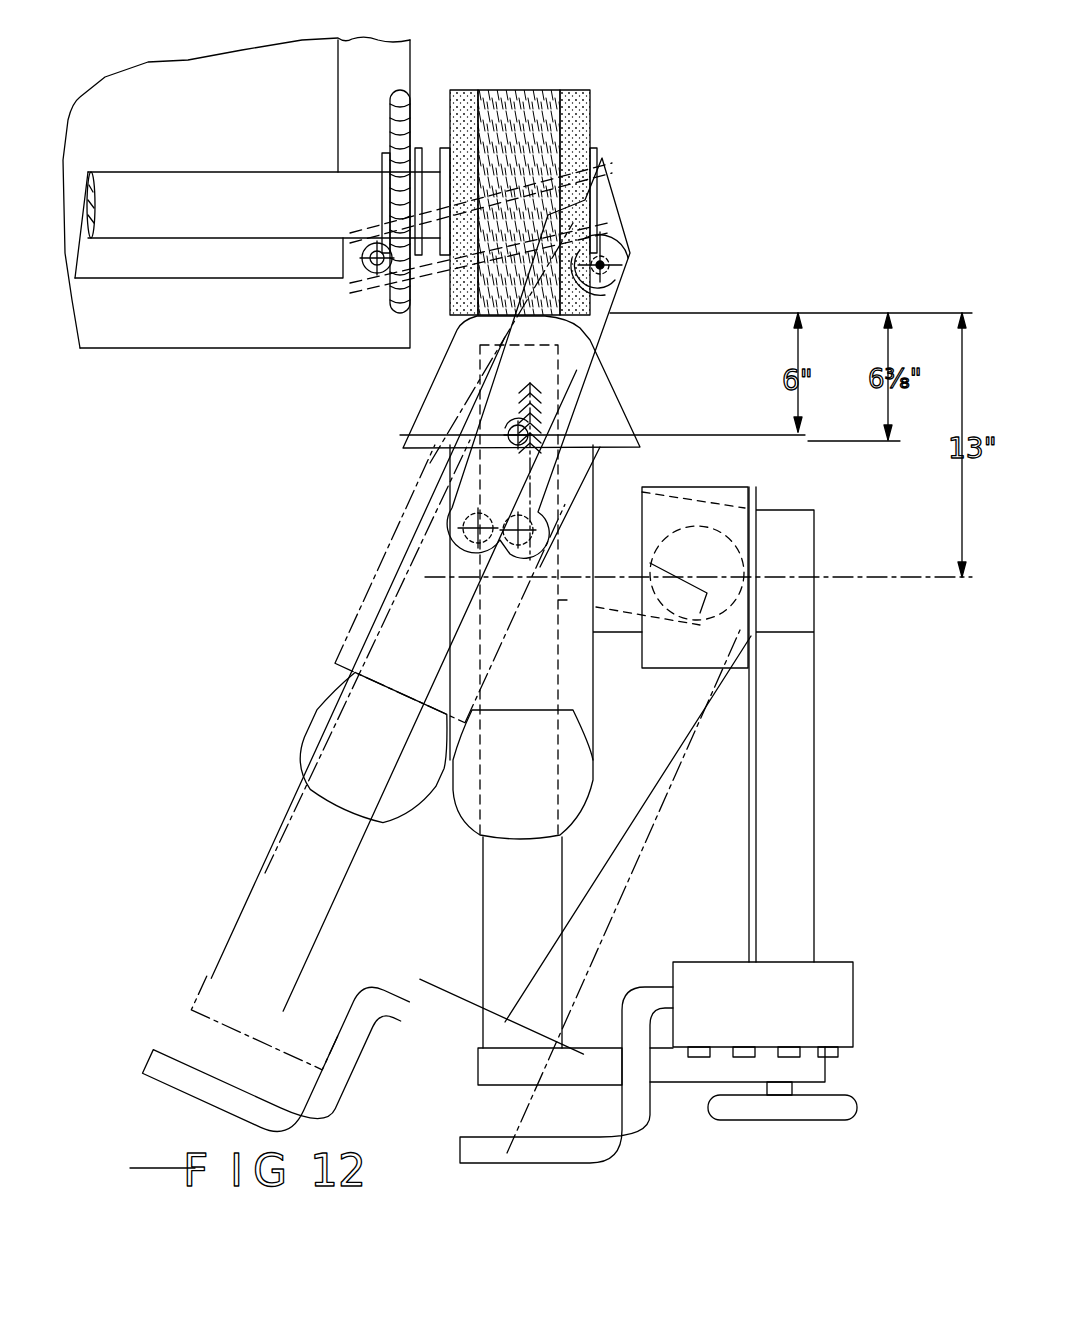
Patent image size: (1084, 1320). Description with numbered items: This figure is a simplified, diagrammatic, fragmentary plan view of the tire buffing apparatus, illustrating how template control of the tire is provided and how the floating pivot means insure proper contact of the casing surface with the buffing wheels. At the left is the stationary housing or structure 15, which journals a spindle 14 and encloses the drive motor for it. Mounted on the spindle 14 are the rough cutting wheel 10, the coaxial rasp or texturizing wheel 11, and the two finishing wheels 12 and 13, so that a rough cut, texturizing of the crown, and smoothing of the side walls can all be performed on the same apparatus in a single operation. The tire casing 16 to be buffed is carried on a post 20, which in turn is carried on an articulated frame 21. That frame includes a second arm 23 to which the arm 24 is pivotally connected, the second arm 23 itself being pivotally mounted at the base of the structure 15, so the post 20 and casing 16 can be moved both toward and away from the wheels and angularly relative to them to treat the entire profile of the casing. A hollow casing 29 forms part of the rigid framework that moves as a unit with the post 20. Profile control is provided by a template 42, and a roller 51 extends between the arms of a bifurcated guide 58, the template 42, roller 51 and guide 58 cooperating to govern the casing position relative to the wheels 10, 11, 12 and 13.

The rough cutting wheel 10 is at (413, 98).
The rasp or texturizing wheel 11 is at (527, 87).
The finishing wheel 12 is at (458, 85).
The finishing wheel 13 is at (577, 87).
The spindle 14 is at (260, 170).
The stationary housing or structure 15 is at (187, 280).
The casing 16 is at (595, 782).
The post 20 is at (815, 607).
The articulated frame 21 is at (565, 920).
The second arm 23 is at (617, 307).
The arm 24 is at (618, 200).
The hollow casing 29 is at (567, 1163).
The template 42 is at (612, 360).
The roller 51 is at (516, 428).
The bifurcated guide 58 is at (490, 403).